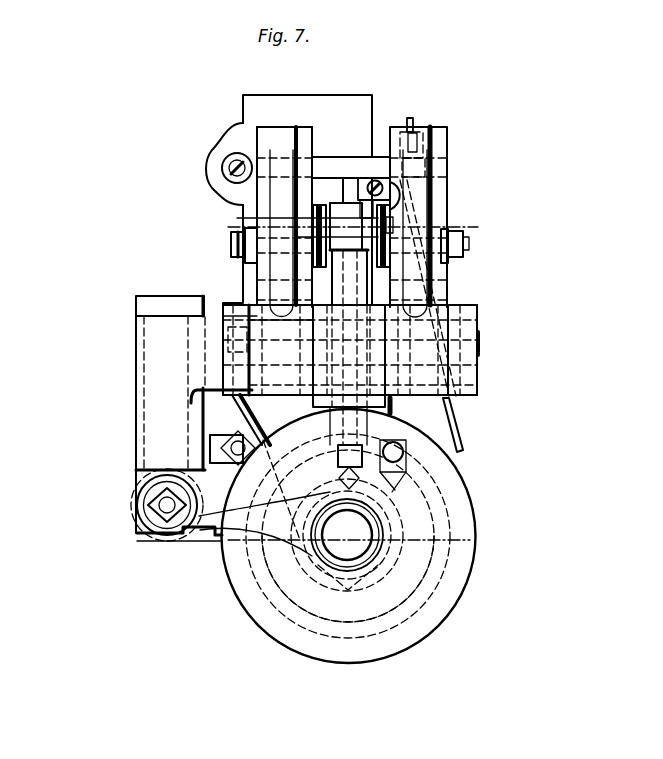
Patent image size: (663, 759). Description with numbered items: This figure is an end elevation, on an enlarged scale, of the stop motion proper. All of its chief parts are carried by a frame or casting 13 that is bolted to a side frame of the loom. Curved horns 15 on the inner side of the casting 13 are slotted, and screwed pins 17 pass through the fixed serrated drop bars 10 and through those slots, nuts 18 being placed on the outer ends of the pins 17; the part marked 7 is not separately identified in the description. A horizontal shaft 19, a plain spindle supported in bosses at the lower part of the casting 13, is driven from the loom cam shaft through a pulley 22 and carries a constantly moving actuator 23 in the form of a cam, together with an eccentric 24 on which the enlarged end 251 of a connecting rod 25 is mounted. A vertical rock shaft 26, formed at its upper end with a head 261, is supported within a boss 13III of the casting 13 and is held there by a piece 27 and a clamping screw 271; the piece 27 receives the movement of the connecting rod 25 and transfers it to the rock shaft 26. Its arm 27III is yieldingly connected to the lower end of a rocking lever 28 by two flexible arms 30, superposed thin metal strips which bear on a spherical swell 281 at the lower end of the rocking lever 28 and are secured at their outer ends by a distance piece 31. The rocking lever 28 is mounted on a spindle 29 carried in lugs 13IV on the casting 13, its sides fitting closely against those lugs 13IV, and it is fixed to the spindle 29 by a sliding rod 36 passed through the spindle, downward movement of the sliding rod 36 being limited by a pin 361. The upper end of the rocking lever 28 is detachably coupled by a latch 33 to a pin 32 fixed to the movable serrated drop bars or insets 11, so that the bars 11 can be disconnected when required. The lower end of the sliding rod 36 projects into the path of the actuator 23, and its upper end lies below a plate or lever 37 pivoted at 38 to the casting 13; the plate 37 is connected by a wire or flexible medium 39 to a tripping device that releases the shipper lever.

The frame or casting 13 is at (316, 126).
The plate or lever 37 is at (334, 166).
The pivot of plate or lever 38 is at (228, 166).
The curved horns 15 is at (485, 207).
The movable serrated drop bars or insets 11 is at (462, 198).
The rocking lever 28 is at (335, 283).
The sliding rod 36 is at (352, 183).
The pin 361 is at (390, 208).
The wire or flexible medium 39 is at (416, 124).
The fixed serrated drop bars 10 is at (313, 258).
The pin 32 is at (258, 218).
The latch 33 is at (395, 236).
The nut 7 is at (230, 241).
The nuts 18 is at (246, 253).
The screwed pins 17 is at (468, 246).
The lugs 13IV is at (415, 338).
The spindle 29 is at (480, 343).
The constantly moving actuator 23 is at (385, 487).
The boss 13III is at (137, 343).
The flexible arms 30 is at (262, 432).
The head 261 is at (136, 306).
The vertical rock shaft 26 is at (144, 388).
The arm or projection 27III is at (146, 470).
The piece 27 is at (136, 512).
The clamping screw 271 is at (137, 537).
The connecting rod 25 is at (245, 537).
The pulley 22 is at (476, 531).
The horizontal shaft 19 is at (347, 535).
The eccentric 24 is at (385, 562).
The enlarged end of connecting rod 251 is at (397, 583).
The spherical swell 281 is at (402, 446).
The distance piece 31 is at (406, 456).